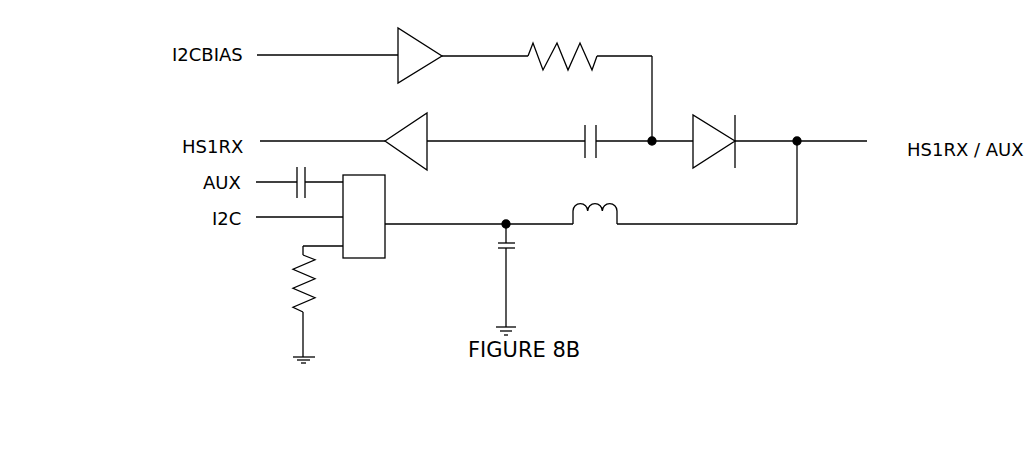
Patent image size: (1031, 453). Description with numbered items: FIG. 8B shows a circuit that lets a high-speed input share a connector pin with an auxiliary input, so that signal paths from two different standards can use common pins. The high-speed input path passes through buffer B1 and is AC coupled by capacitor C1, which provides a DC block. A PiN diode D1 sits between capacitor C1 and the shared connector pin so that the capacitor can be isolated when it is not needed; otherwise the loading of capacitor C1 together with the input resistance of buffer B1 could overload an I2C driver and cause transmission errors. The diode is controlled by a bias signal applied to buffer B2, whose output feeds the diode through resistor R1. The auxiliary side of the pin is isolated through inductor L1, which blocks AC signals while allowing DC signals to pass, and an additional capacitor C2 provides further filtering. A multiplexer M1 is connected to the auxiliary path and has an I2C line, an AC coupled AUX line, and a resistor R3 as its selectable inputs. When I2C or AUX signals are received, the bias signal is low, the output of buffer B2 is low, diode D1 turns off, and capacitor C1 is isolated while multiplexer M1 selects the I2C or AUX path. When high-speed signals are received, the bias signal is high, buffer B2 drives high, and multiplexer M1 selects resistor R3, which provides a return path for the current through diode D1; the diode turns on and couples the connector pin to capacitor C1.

The buffer B1 is at (428, 140).
The buffer B2 is at (427, 54).
The resistor R1 is at (563, 45).
The resistor R3 is at (290, 304).
The capacitor C1 is at (595, 131).
The capacitor C2 is at (391, 242).
The PiN diode D1 is at (714, 128).
The inductor L1 is at (595, 231).
The multiplexer M1 is at (364, 216).